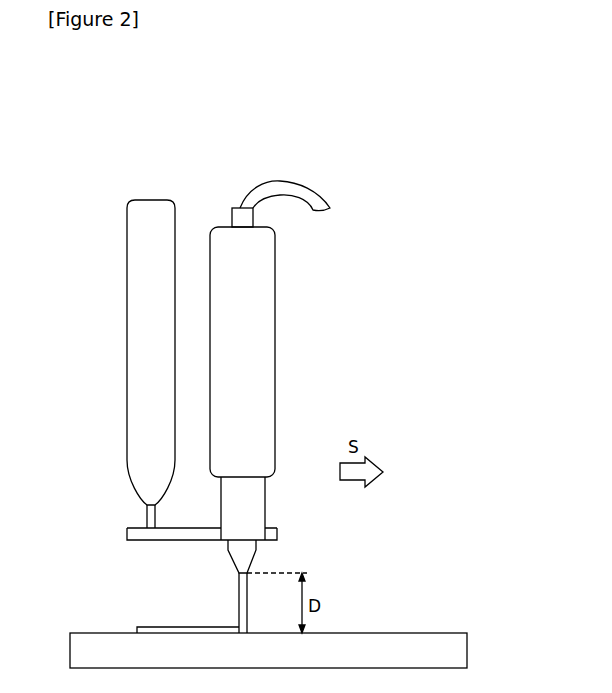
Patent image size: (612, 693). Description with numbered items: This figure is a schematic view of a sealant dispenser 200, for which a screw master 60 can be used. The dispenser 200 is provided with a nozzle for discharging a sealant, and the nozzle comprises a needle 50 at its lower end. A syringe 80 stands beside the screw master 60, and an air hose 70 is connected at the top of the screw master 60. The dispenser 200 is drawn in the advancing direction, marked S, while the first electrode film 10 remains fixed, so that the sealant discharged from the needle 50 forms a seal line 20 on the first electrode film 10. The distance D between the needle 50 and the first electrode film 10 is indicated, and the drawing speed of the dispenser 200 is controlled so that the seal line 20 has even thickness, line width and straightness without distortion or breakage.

The dispenser 200 is at (175, 133).
The syringe 80 is at (147, 335).
The screw master 60 is at (255, 337).
The air hose 70 is at (282, 188).
The needle of nozzle 50 is at (238, 557).
The seal line 20 is at (239, 600).
The first electrode film 10 is at (459, 650).